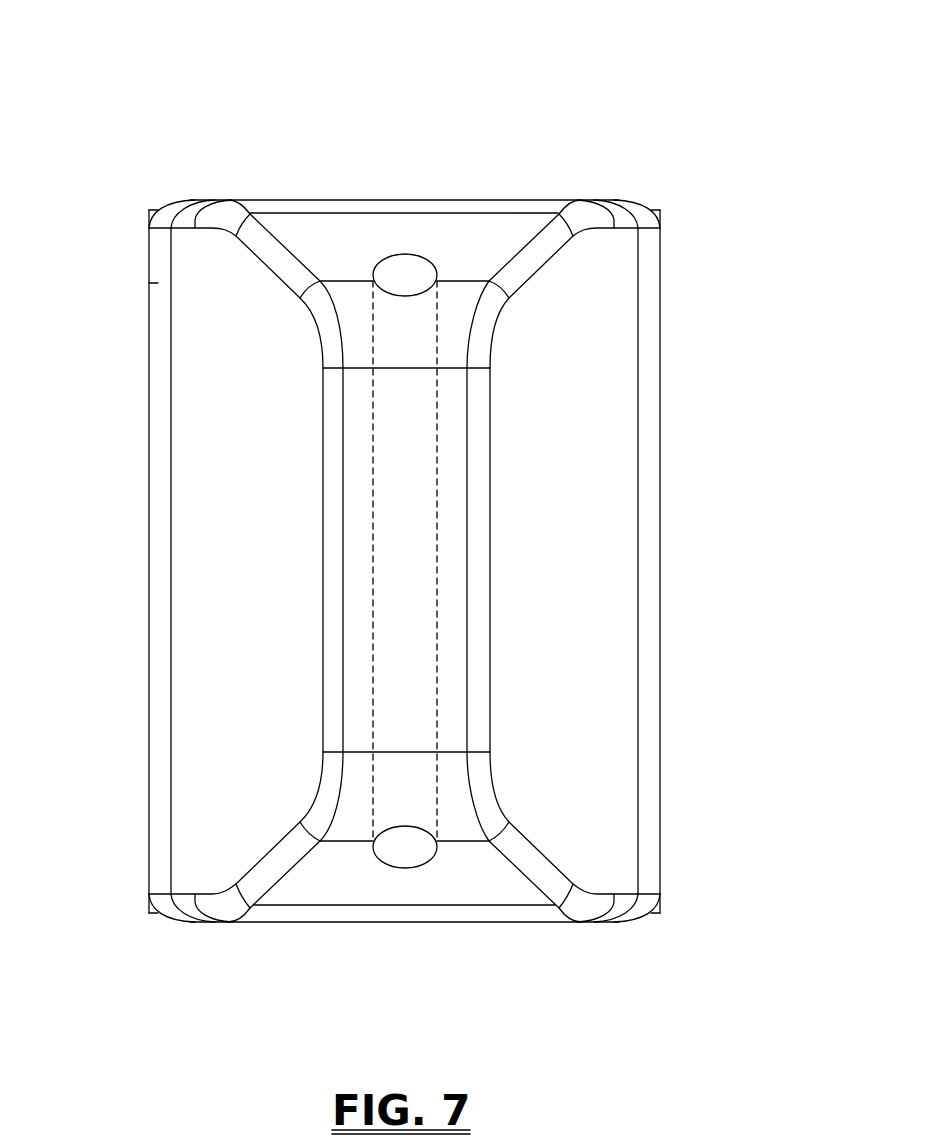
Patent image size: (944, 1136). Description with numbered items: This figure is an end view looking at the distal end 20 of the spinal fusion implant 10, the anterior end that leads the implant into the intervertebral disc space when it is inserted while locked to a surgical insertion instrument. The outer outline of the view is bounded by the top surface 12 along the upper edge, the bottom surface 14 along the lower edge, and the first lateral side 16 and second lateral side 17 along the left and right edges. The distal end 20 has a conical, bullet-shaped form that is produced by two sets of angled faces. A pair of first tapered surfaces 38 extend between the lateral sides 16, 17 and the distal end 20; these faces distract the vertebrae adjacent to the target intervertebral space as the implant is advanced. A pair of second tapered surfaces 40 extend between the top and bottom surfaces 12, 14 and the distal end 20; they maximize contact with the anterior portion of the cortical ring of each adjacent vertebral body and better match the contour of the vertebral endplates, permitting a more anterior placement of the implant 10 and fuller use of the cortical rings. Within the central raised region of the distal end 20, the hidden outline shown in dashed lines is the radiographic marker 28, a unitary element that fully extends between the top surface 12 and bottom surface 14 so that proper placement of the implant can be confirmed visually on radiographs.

The spinal fusion implant 10 is at (435, 66).
The top surface 12 is at (505, 199).
The bottom surface 14 is at (424, 922).
The first lateral side 16 is at (149, 283).
The second lateral side 17 is at (660, 287).
The distal end 20 is at (457, 477).
The radiographic marker 28 is at (398, 413).
The first tapered surfaces 38 is at (213, 670).
The second tapered surfaces 40 is at (345, 237).